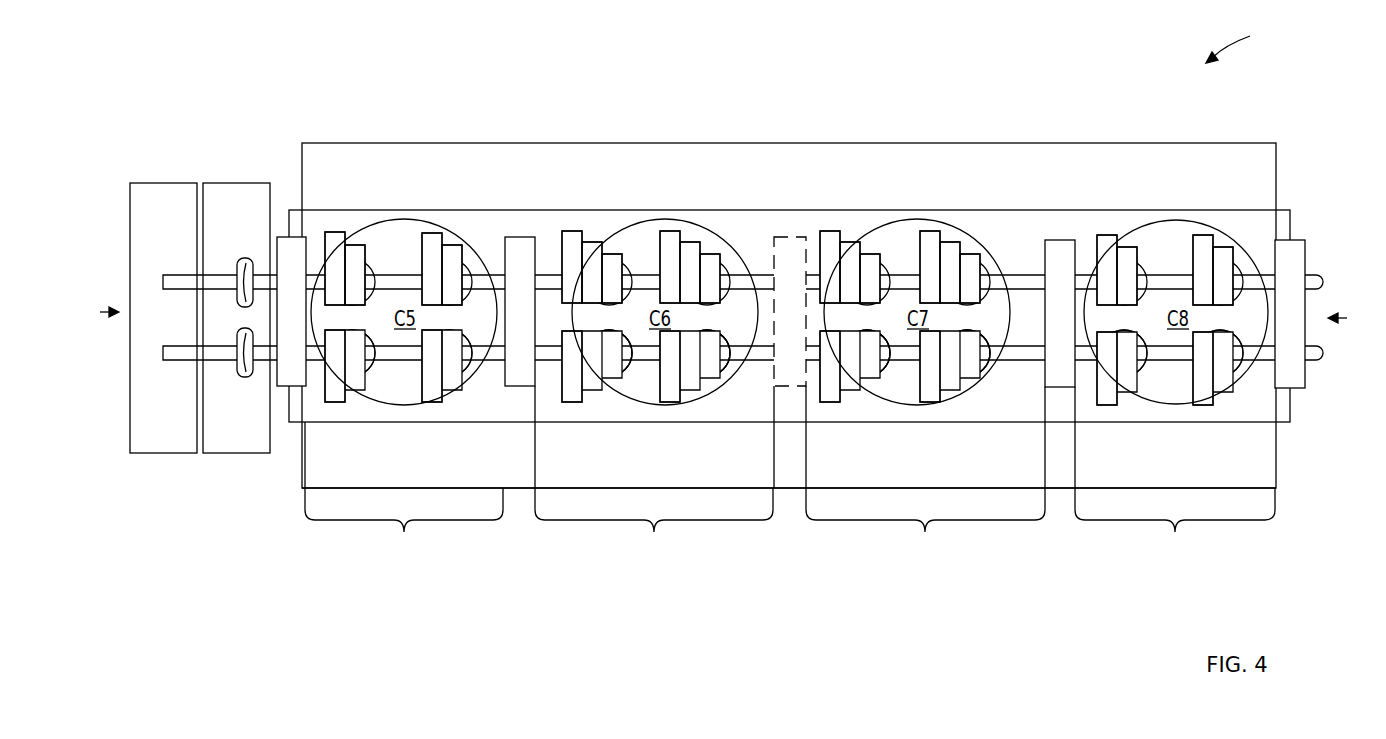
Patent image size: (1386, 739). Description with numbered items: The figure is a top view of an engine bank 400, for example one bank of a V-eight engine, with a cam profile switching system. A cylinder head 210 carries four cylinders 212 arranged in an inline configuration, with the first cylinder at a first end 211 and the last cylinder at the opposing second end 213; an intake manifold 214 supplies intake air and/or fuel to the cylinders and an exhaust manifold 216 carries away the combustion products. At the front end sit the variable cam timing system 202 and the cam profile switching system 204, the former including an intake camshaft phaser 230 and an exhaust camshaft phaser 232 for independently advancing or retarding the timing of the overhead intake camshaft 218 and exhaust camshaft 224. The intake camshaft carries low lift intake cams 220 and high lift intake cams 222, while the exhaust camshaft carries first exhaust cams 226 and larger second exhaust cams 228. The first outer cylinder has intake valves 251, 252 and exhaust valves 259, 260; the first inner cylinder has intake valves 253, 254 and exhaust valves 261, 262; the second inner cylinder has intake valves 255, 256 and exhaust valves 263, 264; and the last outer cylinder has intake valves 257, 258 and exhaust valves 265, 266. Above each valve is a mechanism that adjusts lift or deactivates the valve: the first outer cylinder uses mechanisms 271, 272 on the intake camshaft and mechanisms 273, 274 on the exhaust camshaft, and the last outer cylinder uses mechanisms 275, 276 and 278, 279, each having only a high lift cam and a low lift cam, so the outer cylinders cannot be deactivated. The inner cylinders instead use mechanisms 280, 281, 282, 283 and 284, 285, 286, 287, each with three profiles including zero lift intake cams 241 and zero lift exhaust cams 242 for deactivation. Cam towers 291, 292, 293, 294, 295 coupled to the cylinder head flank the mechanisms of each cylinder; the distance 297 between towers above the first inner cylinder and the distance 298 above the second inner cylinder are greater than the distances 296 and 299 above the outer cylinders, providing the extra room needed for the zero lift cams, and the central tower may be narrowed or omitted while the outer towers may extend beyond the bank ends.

The variable cam timing (VCT) system 202 is at (160, 183).
The cam profile switching (CPS) system 204 is at (238, 183).
The cylinder head 210 is at (1290, 210).
The first end 211 is at (95, 313).
The cylinders 212 is at (476, 368).
The second end 213 is at (1352, 319).
The intake manifold 214 is at (1210, 143).
The exhaust manifold 216 is at (1202, 488).
The intake camshaft 218 is at (260, 362).
The low lift intake cams 220 is at (353, 380).
The high lift intake cams 222 is at (336, 402).
The exhaust camshaft 224 is at (259, 275).
The first exhaust cams 226 is at (354, 258).
The second exhaust cams 228 is at (340, 240).
The intake camshaft phaser 230 is at (250, 378).
The exhaust camshaft phaser 232 is at (250, 262).
The zero lift intake cams 241 is at (600, 377).
The zero lift exhaust cams 242 is at (610, 265).
The intake valve 251 is at (372, 328).
The intake valve 252 is at (468, 337).
The intake valve 253 is at (628, 330).
The intake valve 254 is at (720, 333).
The intake valve 255 is at (886, 330).
The intake valve 256 is at (990, 335).
The intake valve 257 is at (1143, 333).
The intake valve 258 is at (1230, 338).
The exhaust valve 259 is at (376, 265).
The exhaust valve 260 is at (473, 270).
The exhaust valve 261 is at (630, 250).
The exhaust valve 262 is at (735, 272).
The exhaust valve 263 is at (888, 268).
The exhaust valve 264 is at (992, 265).
The exhaust valve 265 is at (1143, 268).
The exhaust valve 266 is at (1238, 268).
The lift mechanism 271 is at (345, 366).
The lift mechanism 272 is at (442, 366).
The lift mechanism 273 is at (345, 268).
The lift mechanism 274 is at (442, 269).
The lift mechanism 275 is at (1117, 368).
The lift mechanism 276 is at (1213, 368).
The lift mechanism 278 is at (1117, 270).
The lift mechanism 279 is at (1213, 270).
The lift mechanism 280 is at (592, 366).
The lift mechanism 281 is at (690, 366).
The lift mechanism 282 is at (592, 267).
The lift mechanism 283 is at (690, 267).
The lift mechanism 284 is at (850, 366).
The lift mechanism 285 is at (950, 366).
The lift mechanism 286 is at (850, 267).
The lift mechanism 287 is at (950, 267).
The cam tower 291 is at (291, 311).
The cam tower 292 is at (520, 362).
The cam tower 293 is at (790, 362).
The cam tower 294 is at (1060, 364).
The cam tower 295 is at (1290, 314).
The distance 296 is at (404, 524).
The distance 297 is at (654, 524).
The distance 298 is at (925, 524).
The distance 299 is at (1175, 524).
The engine bank 400 is at (1246, 43).